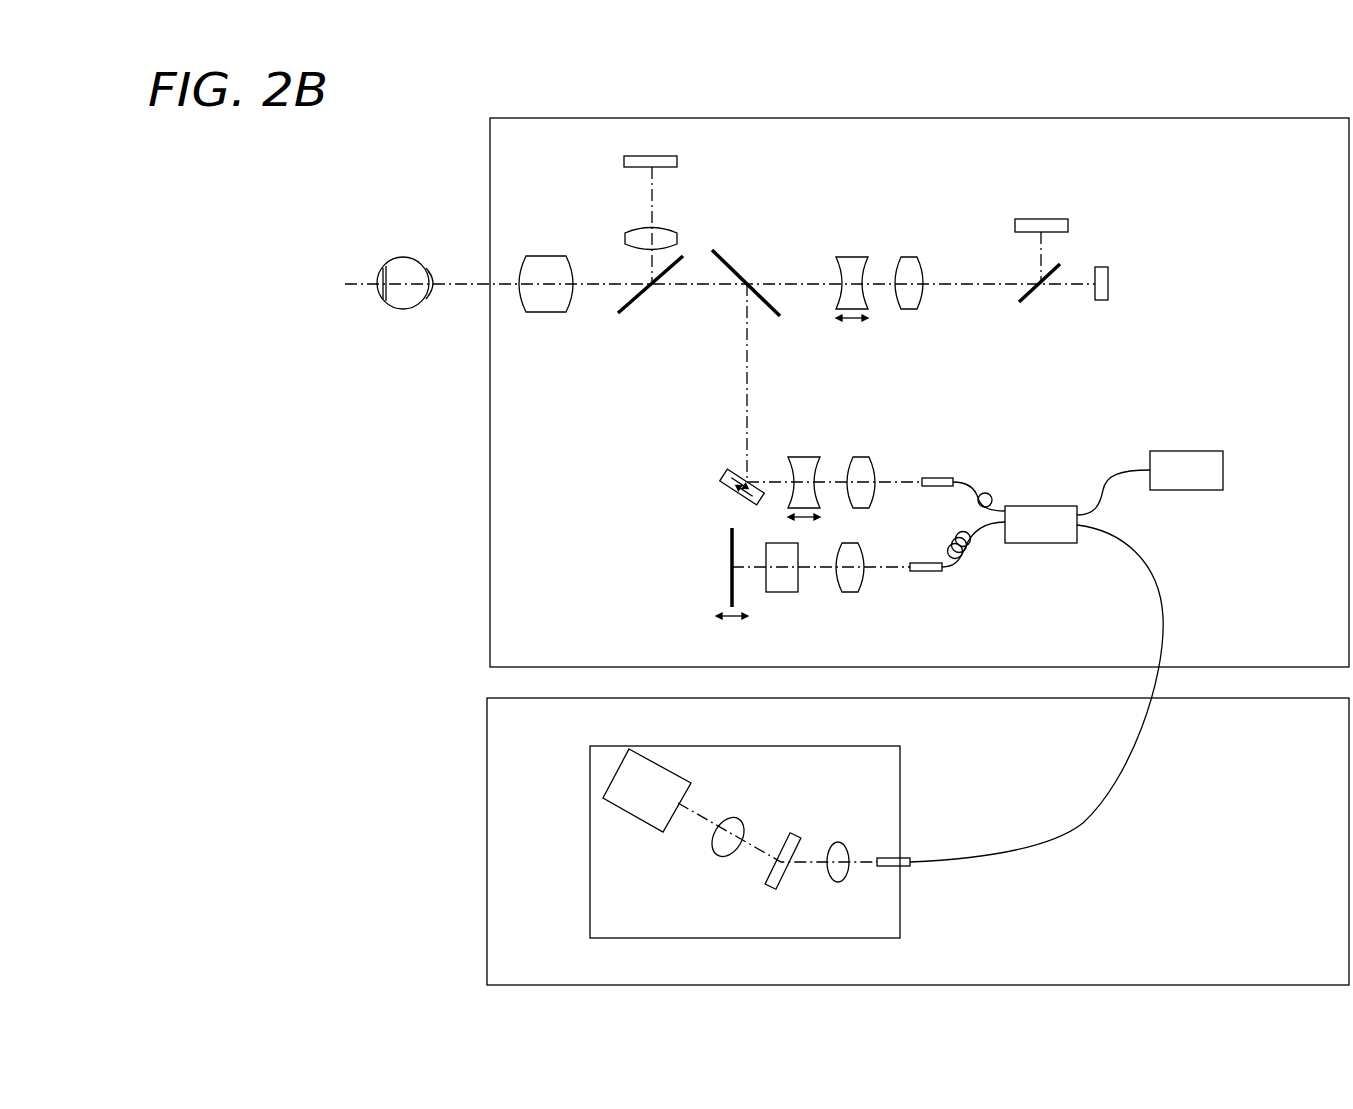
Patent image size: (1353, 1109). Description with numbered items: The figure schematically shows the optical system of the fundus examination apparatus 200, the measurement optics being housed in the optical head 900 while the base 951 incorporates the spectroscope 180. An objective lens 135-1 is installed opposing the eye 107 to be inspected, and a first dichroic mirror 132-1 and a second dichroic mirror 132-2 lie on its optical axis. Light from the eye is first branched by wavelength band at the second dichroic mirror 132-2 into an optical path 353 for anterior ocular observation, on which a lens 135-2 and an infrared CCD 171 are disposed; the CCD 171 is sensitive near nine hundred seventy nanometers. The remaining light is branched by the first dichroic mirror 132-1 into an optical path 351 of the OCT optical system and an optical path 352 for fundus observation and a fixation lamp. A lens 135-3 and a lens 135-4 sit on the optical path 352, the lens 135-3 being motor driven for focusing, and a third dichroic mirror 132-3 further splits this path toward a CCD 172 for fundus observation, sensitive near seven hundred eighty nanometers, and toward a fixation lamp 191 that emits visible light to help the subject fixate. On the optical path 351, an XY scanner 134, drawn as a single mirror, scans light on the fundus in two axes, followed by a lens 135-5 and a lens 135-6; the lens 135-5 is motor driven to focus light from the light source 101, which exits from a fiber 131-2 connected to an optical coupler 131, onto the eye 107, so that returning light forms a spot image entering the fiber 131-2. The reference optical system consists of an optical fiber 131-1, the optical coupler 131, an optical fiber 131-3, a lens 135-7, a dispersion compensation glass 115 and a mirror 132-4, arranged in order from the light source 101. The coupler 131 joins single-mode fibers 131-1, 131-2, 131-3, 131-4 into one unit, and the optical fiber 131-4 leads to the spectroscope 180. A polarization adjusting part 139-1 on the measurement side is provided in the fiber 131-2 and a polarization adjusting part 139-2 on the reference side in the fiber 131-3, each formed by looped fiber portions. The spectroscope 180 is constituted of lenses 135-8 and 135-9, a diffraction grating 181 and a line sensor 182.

The fundus examination apparatus 200 is at (446, 130).
The optical head 900 is at (490, 200).
The base 951 is at (487, 779).
The eye to be inspected 107 is at (402, 306).
The objective lens 135-1 is at (545, 313).
The lens 135-2 is at (630, 240).
The lens 135-3 is at (851, 267).
The lens 135-4 is at (910, 267).
The lens 135-5 is at (804, 464).
The lens 135-6 is at (861, 464).
The lens 135-7 is at (850, 592).
The lens 135-8 is at (838, 880).
The lens 135-9 is at (716, 843).
The first dichroic mirror 132-1 is at (628, 303).
The second dichroic mirror 132-2 is at (737, 273).
The third dichroic mirror 132-3 is at (1035, 292).
The mirror 132-4 is at (730, 565).
The infrared CCD 171 is at (624, 161).
The CCD 172 is at (1040, 221).
The fixation lamp 191 is at (1108, 282).
The optical path 351 is at (746, 326).
The optical path 352 is at (786, 280).
The optical path 353 is at (655, 195).
The XY scanner 134 is at (728, 480).
The dispersion compensation glass 115 is at (782, 592).
The optical coupler 131 is at (1041, 543).
The optical fiber 131-1 is at (1102, 488).
The fiber 131-2 is at (972, 482).
The optical fiber 131-3 is at (982, 527).
The optical fiber 131-4 is at (1132, 550).
The polarization adjusting part 139-1 is at (993, 496).
The polarization adjusting part 139-2 is at (952, 538).
The light source 101 is at (1186, 456).
The spectroscope 180 is at (590, 775).
The diffraction grating 181 is at (790, 838).
The line sensor 182 is at (666, 777).